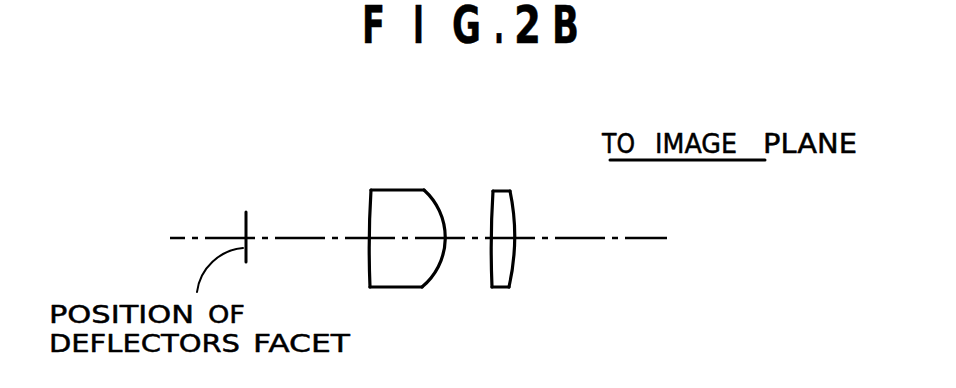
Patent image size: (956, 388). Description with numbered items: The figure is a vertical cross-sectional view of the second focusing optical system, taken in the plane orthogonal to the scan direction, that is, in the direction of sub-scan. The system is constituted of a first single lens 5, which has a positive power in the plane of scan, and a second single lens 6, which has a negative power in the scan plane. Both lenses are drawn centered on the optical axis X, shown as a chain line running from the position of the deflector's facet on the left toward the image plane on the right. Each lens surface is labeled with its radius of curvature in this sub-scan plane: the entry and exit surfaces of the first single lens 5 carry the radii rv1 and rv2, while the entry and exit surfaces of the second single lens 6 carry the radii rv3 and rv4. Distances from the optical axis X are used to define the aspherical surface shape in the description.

The first single lens 5 is at (399, 242).
The second single lens 6 is at (530, 243).
The radius of curvature in the sub-scan plane of the first surface of the first lens rv1 is at (371, 212).
The radius of curvature in the sub-scan plane of the second surface of the first len rv2 is at (433, 208).
The radius of curvature in the sub-scan plane of the first surface of the second len rv3 is at (492, 202).
The radius of curvature in the sub-scan plane of the second surface of the second le rv4 is at (516, 212).
The optical axis X is at (595, 238).